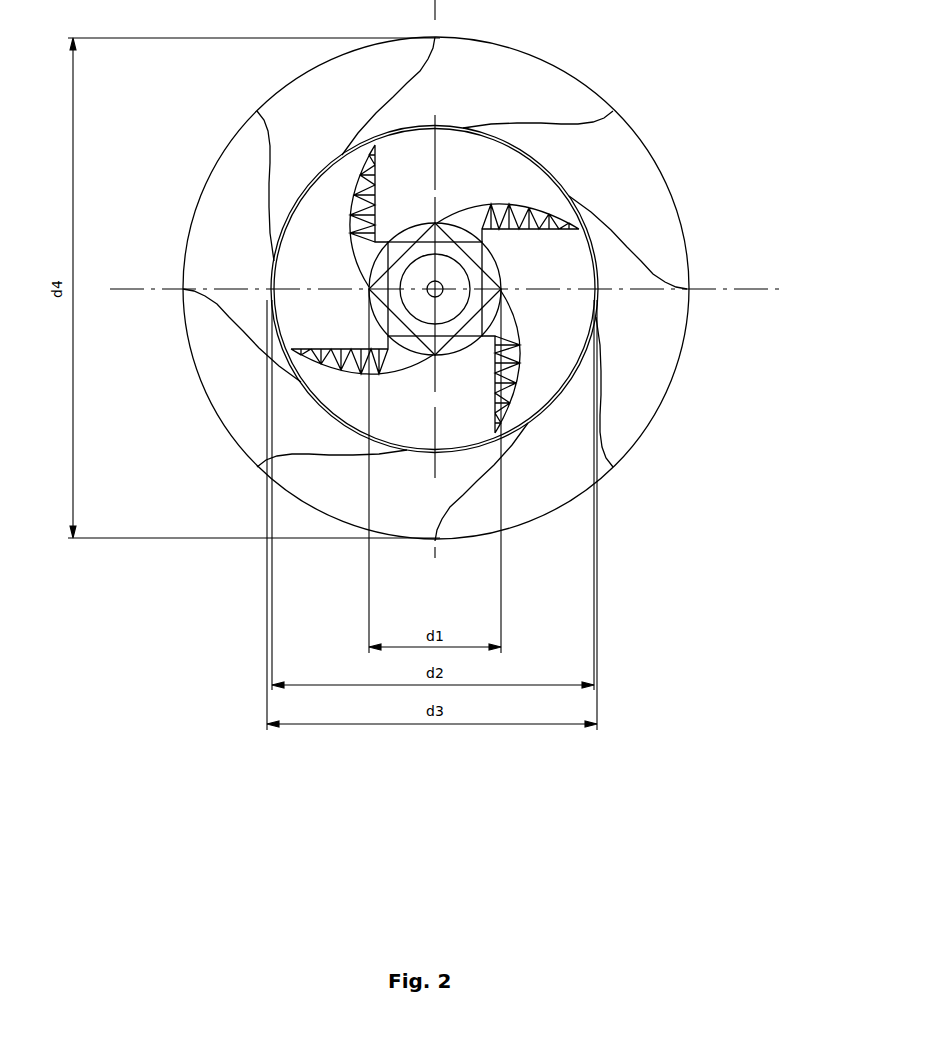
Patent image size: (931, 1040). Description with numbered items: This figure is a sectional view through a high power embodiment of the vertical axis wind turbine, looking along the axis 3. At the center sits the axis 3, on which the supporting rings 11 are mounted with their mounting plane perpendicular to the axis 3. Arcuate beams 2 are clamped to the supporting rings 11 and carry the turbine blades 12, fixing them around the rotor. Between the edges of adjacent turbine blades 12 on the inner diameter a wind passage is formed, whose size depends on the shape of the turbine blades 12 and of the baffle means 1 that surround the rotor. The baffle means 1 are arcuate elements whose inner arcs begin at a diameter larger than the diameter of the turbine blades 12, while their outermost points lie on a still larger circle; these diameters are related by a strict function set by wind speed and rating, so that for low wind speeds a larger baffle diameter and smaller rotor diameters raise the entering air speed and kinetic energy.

The baffle means 1 is at (583, 123).
The arcuate beams 2 is at (598, 328).
The axis 3 is at (611, 417).
The supporting rings 11 is at (505, 273).
The turbine blades 12 is at (573, 210).